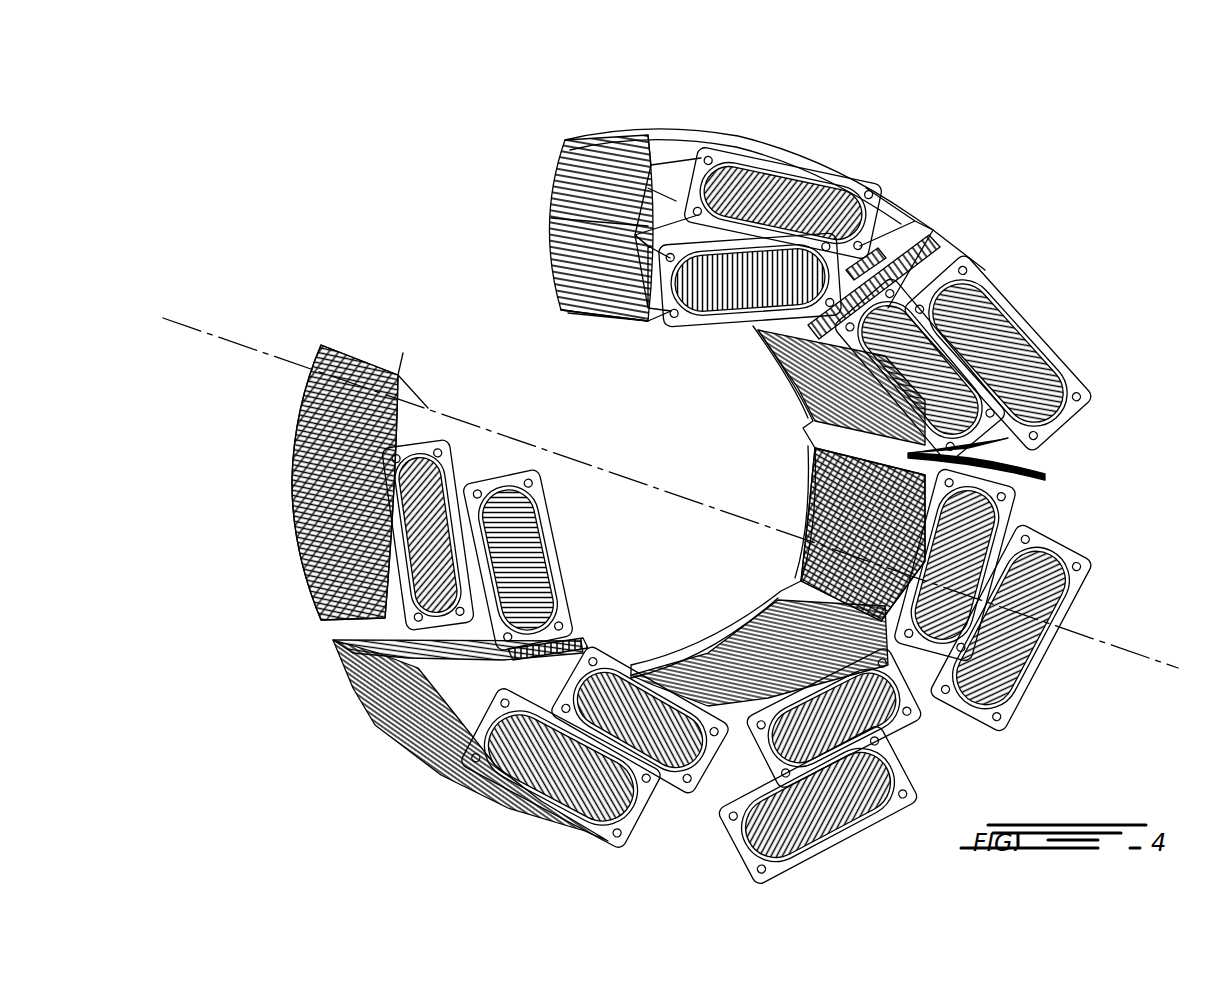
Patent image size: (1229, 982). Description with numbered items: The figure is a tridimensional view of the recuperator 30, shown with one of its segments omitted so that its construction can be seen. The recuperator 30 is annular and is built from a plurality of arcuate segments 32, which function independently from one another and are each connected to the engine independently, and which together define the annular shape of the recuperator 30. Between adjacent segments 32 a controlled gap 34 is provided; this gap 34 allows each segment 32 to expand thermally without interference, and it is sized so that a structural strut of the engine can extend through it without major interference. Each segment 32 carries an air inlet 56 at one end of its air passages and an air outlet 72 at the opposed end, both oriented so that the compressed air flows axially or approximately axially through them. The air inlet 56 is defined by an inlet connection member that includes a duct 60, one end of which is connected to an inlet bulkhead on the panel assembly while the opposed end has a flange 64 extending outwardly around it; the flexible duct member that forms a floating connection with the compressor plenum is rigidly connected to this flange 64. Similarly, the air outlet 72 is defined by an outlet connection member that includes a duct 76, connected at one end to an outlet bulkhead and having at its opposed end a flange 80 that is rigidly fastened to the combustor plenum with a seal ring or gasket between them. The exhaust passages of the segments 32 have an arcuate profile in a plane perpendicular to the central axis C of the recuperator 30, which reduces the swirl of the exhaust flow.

The recuperator 30 is at (1058, 254).
The arcuate segment 32 is at (806, 152).
The controlled gap 34 is at (920, 220).
The air inlet 56 is at (848, 178).
The duct 60 is at (655, 178).
The flange 64 is at (715, 212).
The air outlet 72 is at (743, 293).
The duct 76 is at (645, 275).
The flange 80 is at (692, 297).
The central axis C is at (1105, 632).